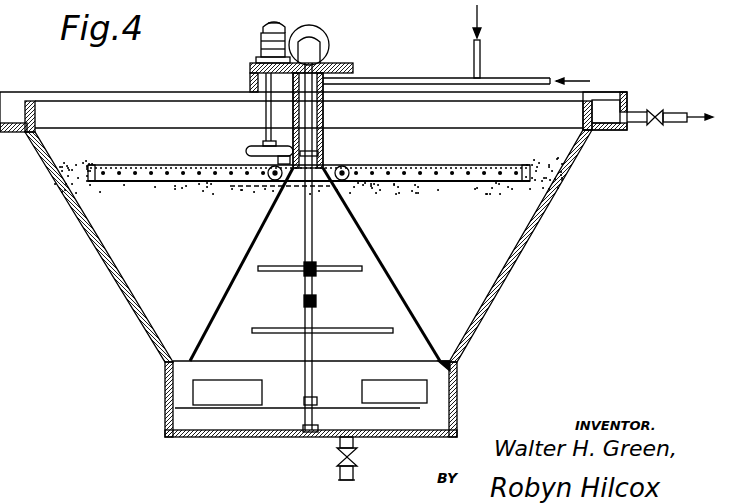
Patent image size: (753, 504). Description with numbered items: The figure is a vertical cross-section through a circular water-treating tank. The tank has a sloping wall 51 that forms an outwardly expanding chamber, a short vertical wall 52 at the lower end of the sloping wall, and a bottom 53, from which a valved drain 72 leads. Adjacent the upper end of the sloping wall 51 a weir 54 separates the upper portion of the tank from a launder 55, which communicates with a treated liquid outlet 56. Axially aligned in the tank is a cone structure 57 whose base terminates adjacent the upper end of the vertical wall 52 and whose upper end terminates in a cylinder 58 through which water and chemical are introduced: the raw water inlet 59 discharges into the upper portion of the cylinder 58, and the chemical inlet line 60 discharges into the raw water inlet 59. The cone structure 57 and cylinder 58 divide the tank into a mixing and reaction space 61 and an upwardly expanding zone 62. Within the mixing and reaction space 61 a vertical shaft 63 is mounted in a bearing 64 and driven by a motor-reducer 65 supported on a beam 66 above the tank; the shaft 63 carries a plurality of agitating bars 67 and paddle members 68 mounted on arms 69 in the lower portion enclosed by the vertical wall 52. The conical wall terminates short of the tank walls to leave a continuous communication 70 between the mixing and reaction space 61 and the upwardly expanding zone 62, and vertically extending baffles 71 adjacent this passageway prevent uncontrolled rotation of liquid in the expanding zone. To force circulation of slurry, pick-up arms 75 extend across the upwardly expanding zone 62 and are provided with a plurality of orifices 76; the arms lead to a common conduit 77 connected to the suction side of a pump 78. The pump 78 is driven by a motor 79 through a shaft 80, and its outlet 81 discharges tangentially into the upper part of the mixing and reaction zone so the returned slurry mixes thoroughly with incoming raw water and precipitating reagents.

The sloping wall 51 is at (100, 248).
The vertical wall 52 is at (165, 391).
The bottom 53 is at (187, 437).
The weir 54 is at (588, 99).
The launder 55 is at (603, 112).
The treated liquid outlet 56 is at (638, 123).
The cone structure 57 is at (385, 264).
The cylinder 58 is at (323, 112).
The raw water inlet 59 is at (527, 79).
The chemical inlet line 60 is at (481, 52).
The mixing and reaction space 61 is at (377, 297).
The upwardly expanding zone 62 is at (500, 245).
The vertical shaft 63 is at (312, 243).
The bearing 64 is at (302, 433).
The motor-reducer 65 is at (309, 43).
The beam 66 is at (348, 62).
The agitating bars 67 is at (338, 271).
The paddle members 68 is at (230, 397).
The arms 69 is at (333, 407).
The continuous communication 70 is at (457, 371).
The baffles 71 is at (470, 320).
The valved drain 72 is at (340, 443).
The pick-up arms 75 is at (191, 164).
The orifices 76 is at (133, 164).
The common conduit 77 is at (343, 164).
The pump 78 is at (248, 151).
The motor 79 is at (256, 40).
The shaft 80 is at (265, 112).
The outlet 81 is at (325, 146).